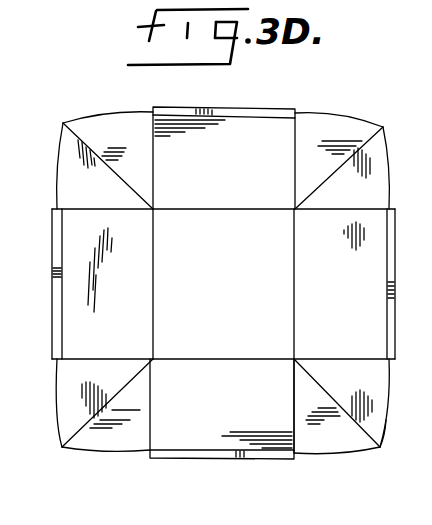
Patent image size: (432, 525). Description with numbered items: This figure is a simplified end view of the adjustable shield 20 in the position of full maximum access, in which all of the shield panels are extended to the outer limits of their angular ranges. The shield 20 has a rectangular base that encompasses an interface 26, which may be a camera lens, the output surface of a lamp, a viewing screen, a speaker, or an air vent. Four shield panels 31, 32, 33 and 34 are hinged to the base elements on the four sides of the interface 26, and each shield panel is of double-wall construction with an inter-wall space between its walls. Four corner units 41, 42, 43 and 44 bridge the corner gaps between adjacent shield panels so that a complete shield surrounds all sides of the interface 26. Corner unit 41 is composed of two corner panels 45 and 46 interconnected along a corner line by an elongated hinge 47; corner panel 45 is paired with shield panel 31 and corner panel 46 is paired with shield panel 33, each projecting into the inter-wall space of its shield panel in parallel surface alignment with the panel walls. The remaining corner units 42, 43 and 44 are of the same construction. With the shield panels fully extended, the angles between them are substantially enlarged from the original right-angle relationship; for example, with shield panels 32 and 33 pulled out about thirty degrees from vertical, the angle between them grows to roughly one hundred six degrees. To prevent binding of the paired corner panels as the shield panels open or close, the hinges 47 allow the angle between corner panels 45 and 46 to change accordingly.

The adjustable shield 20 is at (318, 101).
The interface 26 is at (229, 297).
The shield panel 31 is at (223, 111).
The shield panel 32 is at (228, 457).
The shield panel 33 is at (50, 270).
The shield panel 34 is at (52, 305).
The corner unit 41 is at (396, 96).
The corner unit 42 is at (350, 453).
The corner unit 43 is at (92, 452).
The corner unit 44 is at (113, 114).
The corner panel 45 is at (358, 368).
The corner panel 46 is at (332, 435).
The hinge 47 is at (381, 447).